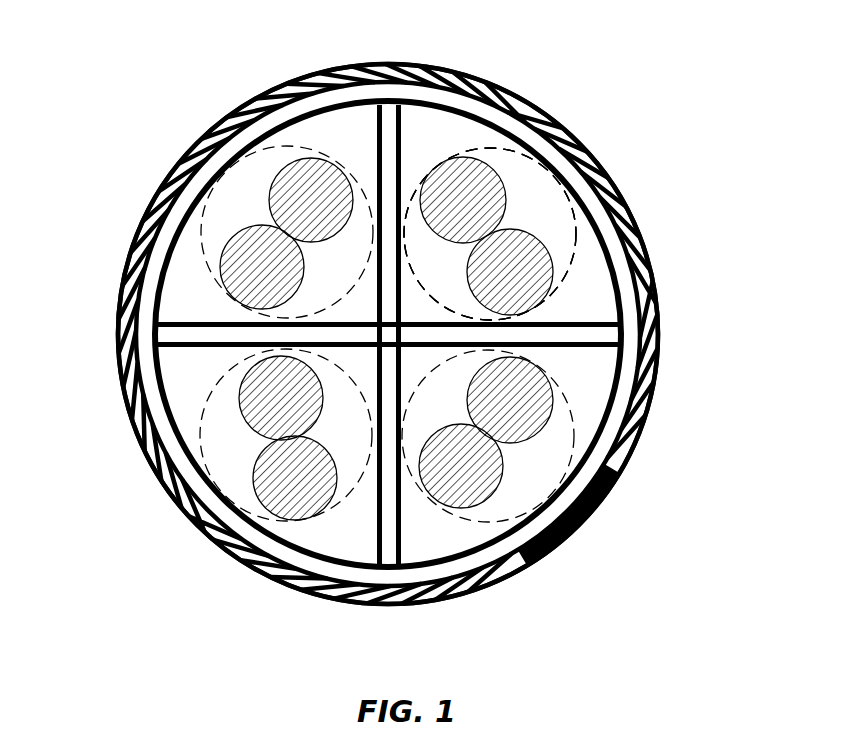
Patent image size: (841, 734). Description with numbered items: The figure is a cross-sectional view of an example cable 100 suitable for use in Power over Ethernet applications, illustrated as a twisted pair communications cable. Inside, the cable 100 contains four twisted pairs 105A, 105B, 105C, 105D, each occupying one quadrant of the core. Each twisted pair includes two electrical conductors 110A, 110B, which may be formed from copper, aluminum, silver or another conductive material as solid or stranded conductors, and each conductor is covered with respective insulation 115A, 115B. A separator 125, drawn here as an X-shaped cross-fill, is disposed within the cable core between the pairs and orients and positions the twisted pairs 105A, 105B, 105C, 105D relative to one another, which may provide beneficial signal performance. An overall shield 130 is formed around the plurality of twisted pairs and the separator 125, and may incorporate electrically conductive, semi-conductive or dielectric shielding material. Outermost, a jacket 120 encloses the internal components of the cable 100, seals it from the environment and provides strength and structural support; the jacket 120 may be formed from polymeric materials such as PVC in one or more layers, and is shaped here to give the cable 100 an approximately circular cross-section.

The cable 100 is at (165, 45).
The twisted pair 105A is at (537, 204).
The twisted pair 105B is at (554, 427).
The twisted pair 105C is at (230, 420).
The twisted pair 105D is at (255, 180).
The electrical conductor 110A is at (465, 192).
The electrical conductor 110B is at (520, 267).
The insulation 115A is at (507, 174).
The insulation 115B is at (540, 231).
The jacket 120 is at (619, 458).
The separator 125 is at (377, 527).
The overall shield 130 is at (633, 310).